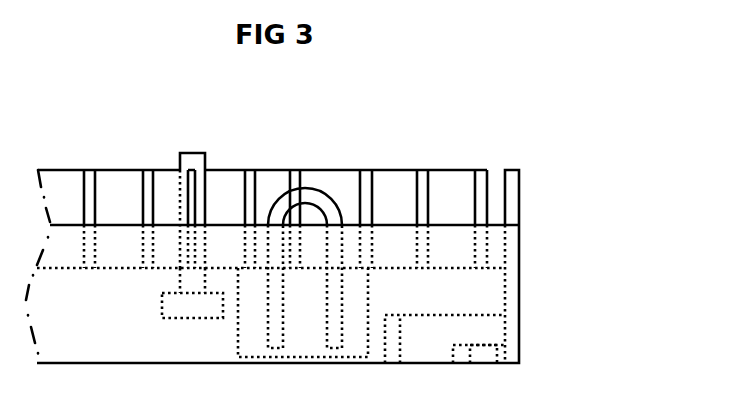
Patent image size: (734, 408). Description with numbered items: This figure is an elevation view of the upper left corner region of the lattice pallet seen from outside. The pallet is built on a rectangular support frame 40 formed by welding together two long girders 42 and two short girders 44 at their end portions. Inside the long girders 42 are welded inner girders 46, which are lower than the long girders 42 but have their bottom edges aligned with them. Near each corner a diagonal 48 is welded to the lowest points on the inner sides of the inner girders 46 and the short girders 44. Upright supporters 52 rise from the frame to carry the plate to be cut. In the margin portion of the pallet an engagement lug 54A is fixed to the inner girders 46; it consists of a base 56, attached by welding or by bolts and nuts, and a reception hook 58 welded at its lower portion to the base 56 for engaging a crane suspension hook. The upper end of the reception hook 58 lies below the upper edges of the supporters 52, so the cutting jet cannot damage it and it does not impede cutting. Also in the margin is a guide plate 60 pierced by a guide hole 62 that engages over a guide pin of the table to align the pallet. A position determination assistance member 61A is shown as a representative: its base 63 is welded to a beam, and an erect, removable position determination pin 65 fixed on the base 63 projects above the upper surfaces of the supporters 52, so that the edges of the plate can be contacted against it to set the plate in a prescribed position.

The support frame 40 is at (612, 162).
The long girder 42 is at (498, 225).
The short girder 44 is at (521, 178).
The inner girder 46 is at (492, 268).
The diagonal 48 is at (480, 315).
The supporter 52 is at (476, 183).
The engagement lug 54A is at (278, 113).
The base 56 is at (237, 290).
The reception hook 58 is at (280, 195).
The guide plate 60 is at (472, 345).
The guide hole 62 is at (489, 363).
The position determination assistance member 61A is at (138, 113).
The base 63 is at (162, 300).
The position determination pin 65 is at (181, 161).